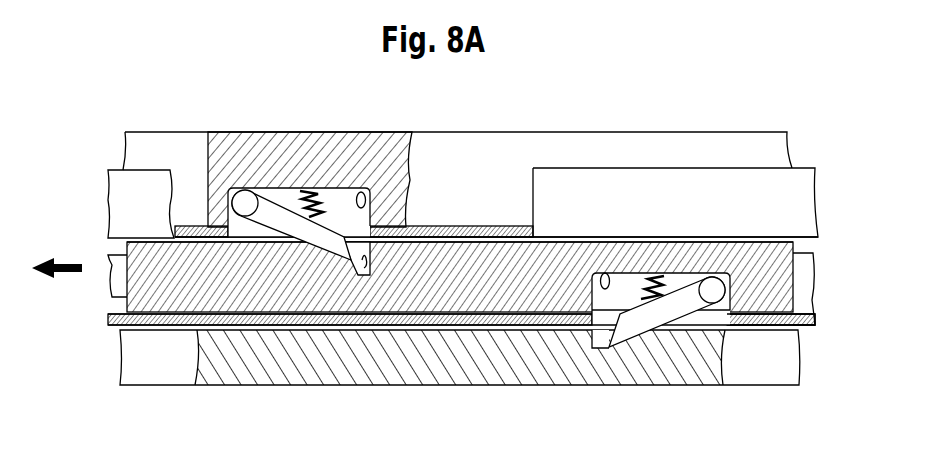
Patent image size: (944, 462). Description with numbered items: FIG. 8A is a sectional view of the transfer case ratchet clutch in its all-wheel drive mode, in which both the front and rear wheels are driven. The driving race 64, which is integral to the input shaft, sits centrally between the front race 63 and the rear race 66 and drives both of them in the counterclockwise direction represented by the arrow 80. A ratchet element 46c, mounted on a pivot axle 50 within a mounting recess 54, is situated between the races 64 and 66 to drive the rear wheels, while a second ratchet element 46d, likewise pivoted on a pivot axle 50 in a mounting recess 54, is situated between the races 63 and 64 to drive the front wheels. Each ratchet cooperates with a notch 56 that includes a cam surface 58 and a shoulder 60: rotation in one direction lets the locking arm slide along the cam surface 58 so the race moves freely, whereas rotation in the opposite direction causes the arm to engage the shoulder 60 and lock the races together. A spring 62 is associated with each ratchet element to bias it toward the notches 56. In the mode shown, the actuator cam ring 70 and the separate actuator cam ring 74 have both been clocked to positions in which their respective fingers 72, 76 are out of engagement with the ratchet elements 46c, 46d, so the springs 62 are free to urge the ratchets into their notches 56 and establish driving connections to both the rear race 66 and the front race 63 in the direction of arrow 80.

The ratchet elements 46c is at (330, 233).
The ratchet elements 46d is at (653, 318).
The pivot axle 50 is at (246, 202).
The mounting recesses 54 is at (360, 195).
The notch 56 is at (420, 235).
The cam surface 58 is at (367, 254).
The shoulder 60 is at (365, 246).
The spring 62 is at (293, 197).
The race 63 is at (777, 152).
The driving race 64 is at (750, 253).
The race 66 is at (785, 368).
The actuator cam ring 70 is at (122, 203).
The finger 72 is at (219, 226).
The actuator cam ring 74 is at (115, 292).
The finger 76 is at (750, 322).
The arrow 80 is at (70, 276).